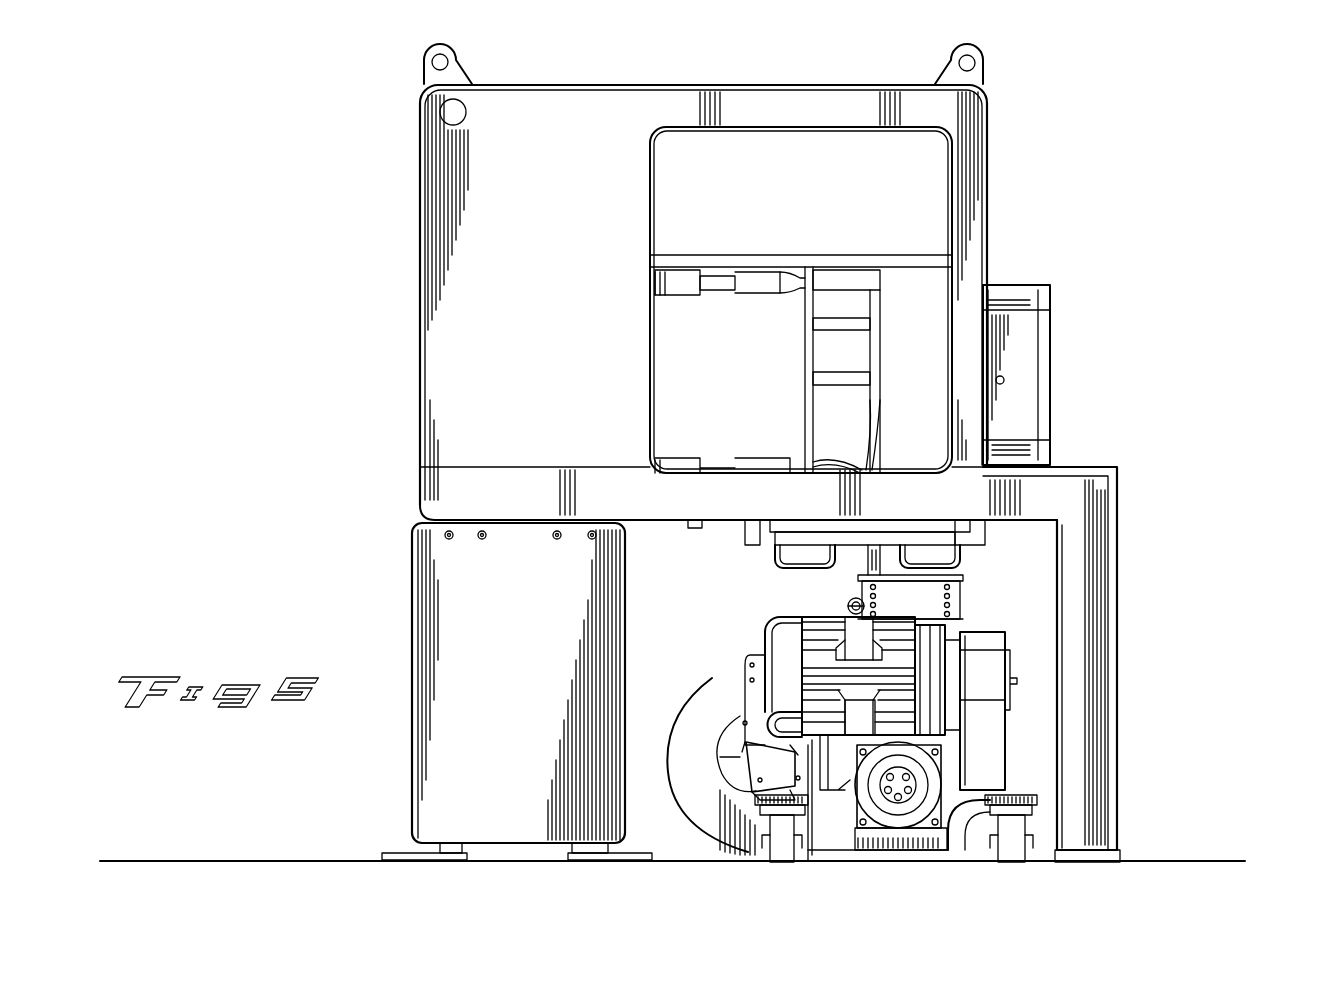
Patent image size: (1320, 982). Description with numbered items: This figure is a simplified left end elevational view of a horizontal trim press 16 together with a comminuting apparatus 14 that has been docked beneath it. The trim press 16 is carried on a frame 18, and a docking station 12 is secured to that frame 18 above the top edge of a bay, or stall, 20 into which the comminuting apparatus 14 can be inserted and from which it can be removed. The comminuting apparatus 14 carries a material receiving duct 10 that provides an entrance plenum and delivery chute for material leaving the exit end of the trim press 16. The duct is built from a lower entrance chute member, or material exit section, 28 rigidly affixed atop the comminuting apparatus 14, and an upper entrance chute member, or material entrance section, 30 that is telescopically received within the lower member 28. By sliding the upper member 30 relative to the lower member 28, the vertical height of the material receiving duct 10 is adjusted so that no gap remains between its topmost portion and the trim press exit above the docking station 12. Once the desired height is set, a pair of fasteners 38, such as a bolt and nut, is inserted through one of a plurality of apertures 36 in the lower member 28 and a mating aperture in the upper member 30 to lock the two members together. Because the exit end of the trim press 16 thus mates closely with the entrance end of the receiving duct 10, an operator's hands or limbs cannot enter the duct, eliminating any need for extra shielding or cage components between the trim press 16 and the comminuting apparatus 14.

The material receiving duct 10 is at (915, 691).
The docking station 12 is at (742, 546).
The comminuting apparatus 14 is at (1019, 698).
The horizontal trim press 16 is at (1037, 196).
The frame 18 is at (1121, 493).
The bay 20 is at (663, 612).
The lower entrance chute member 28 is at (966, 601).
The upper entrance chute member 30 is at (961, 569).
The apertures 36 is at (860, 589).
The fasteners 38 is at (848, 599).